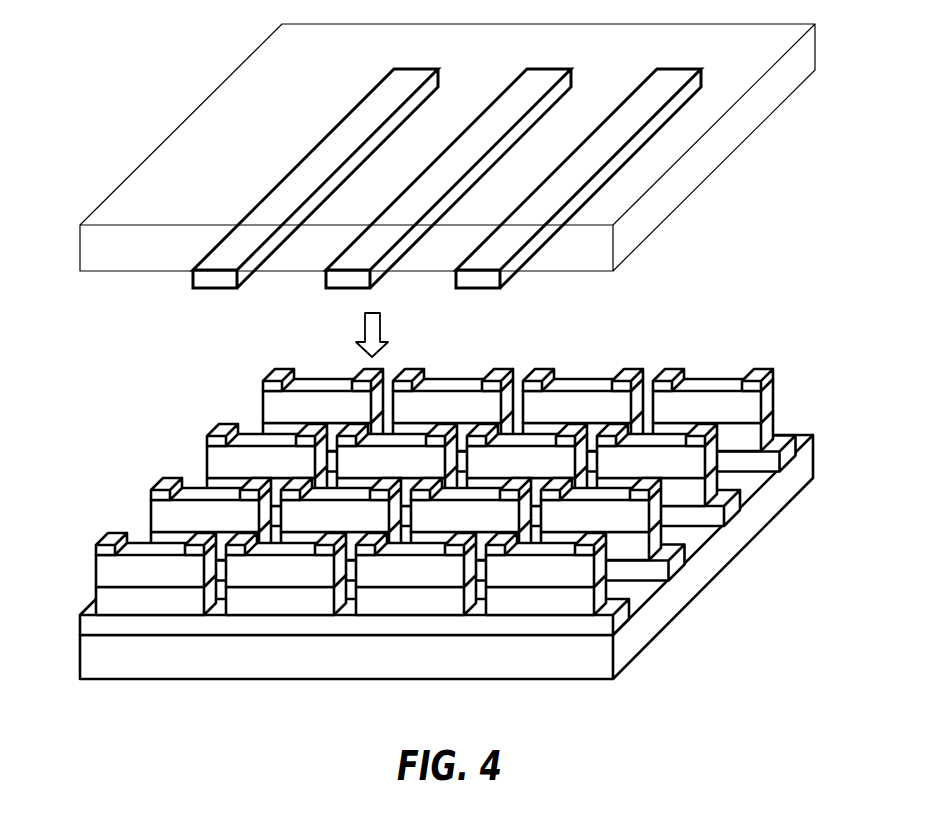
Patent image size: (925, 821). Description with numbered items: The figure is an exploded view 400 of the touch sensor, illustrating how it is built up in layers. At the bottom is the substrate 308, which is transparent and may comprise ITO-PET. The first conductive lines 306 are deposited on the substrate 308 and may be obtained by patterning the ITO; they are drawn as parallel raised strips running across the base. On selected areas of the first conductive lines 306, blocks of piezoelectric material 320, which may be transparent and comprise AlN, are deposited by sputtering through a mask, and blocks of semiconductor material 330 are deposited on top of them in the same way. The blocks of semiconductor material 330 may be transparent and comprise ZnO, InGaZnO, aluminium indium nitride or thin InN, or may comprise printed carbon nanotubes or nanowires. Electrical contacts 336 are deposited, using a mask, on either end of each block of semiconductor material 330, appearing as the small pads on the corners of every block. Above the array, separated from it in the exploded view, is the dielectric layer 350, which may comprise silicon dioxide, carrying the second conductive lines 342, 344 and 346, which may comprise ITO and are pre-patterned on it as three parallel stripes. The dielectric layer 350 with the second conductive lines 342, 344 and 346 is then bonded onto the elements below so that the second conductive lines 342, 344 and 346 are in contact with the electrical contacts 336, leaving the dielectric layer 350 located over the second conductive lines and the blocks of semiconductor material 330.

The memory array structure 400 is at (148, 38).
The dielectric layer 350 is at (80, 247).
The second conductive line 342 is at (213, 281).
The second conductive line 344 is at (343, 281).
The second conductive line 346 is at (477, 280).
The electrical contacts 336 is at (277, 372).
The blocks of semiconductor material 330 is at (105, 571).
The blocks of piezoelectric material 320 is at (105, 598).
The first conductive lines 306 is at (788, 449).
The substrate 308 is at (80, 657).